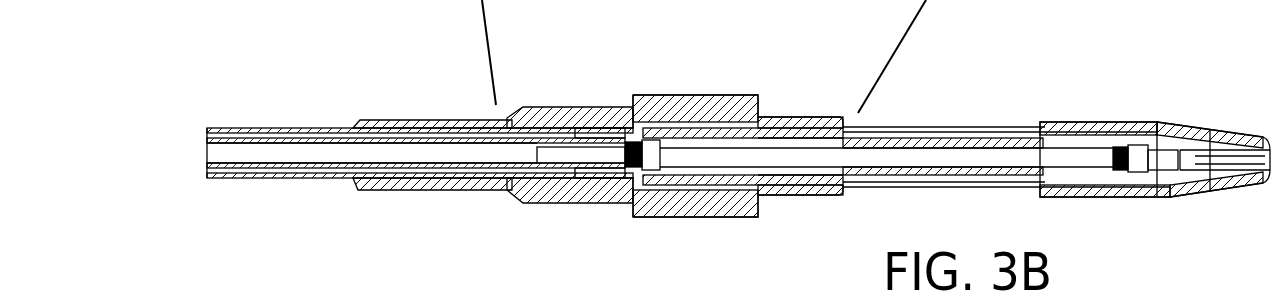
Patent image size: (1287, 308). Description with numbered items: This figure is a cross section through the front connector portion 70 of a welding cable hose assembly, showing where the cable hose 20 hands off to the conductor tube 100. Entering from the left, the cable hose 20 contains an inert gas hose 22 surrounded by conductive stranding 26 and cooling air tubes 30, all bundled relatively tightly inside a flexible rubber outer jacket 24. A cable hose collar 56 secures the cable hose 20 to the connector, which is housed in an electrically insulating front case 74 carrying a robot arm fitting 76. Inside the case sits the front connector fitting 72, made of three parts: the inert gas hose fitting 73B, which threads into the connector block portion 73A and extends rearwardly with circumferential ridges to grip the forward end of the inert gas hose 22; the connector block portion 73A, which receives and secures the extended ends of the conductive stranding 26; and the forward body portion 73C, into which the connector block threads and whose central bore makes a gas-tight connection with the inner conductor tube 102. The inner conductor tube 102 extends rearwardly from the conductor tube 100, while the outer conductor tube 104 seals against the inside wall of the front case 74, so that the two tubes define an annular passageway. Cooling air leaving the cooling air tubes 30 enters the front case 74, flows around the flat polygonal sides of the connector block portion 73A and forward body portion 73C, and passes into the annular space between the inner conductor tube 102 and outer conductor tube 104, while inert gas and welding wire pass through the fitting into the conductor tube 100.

The cable hose 20 is at (240, 120).
The inert gas hose 22 is at (320, 152).
The outer jacket 24 is at (277, 127).
The conductive stranding 26 is at (583, 133).
The cooling air tubes 30 is at (207, 166).
The cable hose collar 56 is at (453, 192).
The front connector portion 70 is at (657, 49).
The front connector fitting 72 is at (785, 185).
The connector block portion 73A is at (597, 180).
The inert gas hose fitting 73B is at (568, 150).
The forward body portion 73C is at (665, 177).
The front case 74 is at (540, 117).
The robot arm fitting 76 is at (688, 97).
The conductor tube 100 is at (1023, 62).
The inner conductor tube 102 is at (1030, 190).
The outer conductor tube 104 is at (1030, 125).